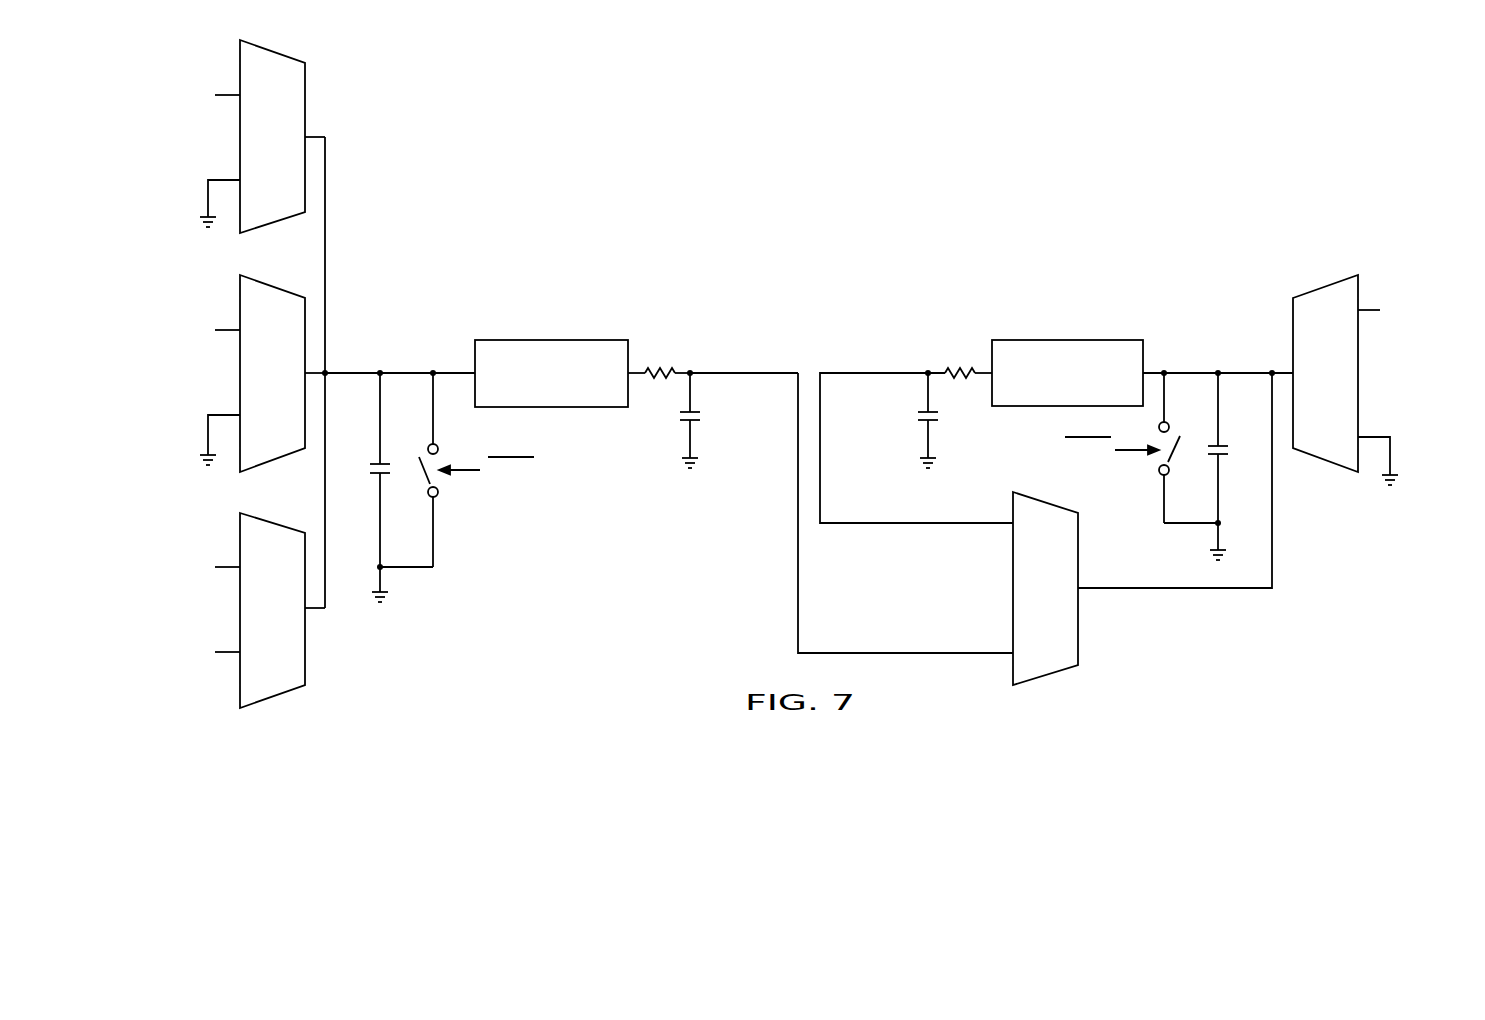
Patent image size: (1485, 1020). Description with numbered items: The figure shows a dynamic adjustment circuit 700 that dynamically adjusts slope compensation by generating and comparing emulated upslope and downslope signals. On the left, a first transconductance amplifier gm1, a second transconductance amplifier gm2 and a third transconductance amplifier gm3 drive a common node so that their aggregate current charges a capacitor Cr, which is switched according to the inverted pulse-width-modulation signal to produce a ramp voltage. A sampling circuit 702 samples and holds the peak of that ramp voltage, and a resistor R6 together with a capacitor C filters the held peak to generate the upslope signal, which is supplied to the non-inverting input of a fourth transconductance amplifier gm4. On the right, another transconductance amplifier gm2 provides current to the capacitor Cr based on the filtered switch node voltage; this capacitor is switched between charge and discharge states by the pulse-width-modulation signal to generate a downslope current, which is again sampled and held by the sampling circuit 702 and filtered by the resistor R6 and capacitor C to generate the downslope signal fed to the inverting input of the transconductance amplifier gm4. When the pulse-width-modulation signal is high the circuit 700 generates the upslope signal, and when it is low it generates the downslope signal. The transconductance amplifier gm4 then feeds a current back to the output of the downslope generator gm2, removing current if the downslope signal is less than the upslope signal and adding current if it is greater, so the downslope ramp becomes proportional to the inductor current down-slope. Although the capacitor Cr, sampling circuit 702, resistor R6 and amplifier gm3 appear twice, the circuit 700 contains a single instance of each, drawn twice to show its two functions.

The dynamic adjustment circuit 700 is at (948, 119).
The sampling circuit 702 is at (550, 340).
The first transconductance amplifier gm1 is at (225, 136).
The second transconductance amplifier gm2 is at (226, 373).
The third transconductance amplifier gm3 is at (211, 610).
The fourth transconductance amplifier gm4 is at (1045, 588).
The resistor R6 is at (659, 360).
The capacitor C is at (680, 420).
The capacitor Cr is at (366, 487).